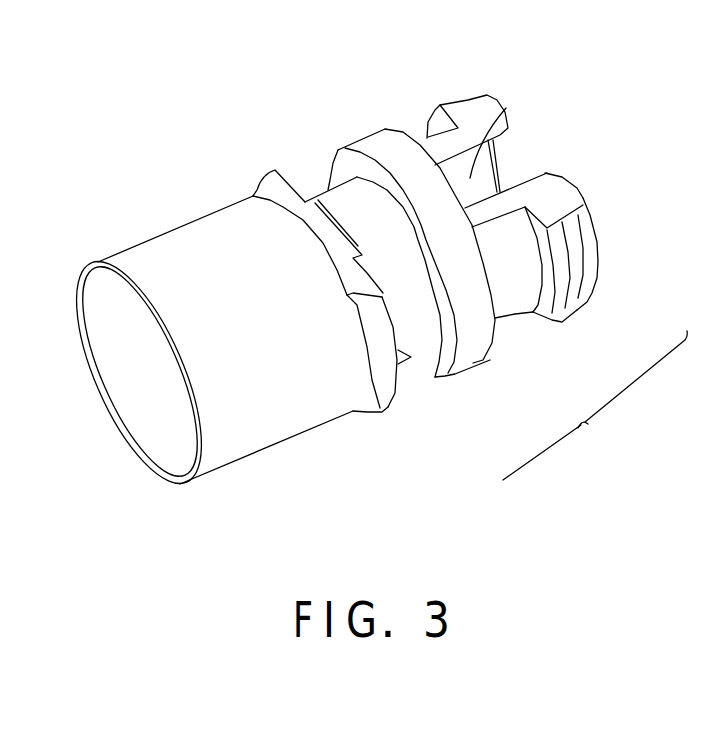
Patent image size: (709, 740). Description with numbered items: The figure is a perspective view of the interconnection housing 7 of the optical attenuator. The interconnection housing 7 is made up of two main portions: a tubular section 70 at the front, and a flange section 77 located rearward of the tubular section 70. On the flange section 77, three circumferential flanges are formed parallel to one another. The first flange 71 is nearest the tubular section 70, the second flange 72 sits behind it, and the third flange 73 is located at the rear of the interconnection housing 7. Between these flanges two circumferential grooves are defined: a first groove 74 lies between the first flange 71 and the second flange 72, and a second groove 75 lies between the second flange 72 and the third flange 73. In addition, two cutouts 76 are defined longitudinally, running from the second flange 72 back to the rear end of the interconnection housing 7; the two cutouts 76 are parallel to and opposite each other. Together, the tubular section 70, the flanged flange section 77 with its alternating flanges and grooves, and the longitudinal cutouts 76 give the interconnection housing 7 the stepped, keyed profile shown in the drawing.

The interconnection housing 7 is at (216, 202).
The tubular section 70 is at (262, 383).
The first flange 71 is at (380, 388).
The second flange 72 is at (472, 342).
The third flange 73 is at (582, 265).
The first groove 74 is at (410, 357).
The second groove 75 is at (508, 303).
The cutouts 76 is at (415, 147).
The flange section 77 is at (583, 427).